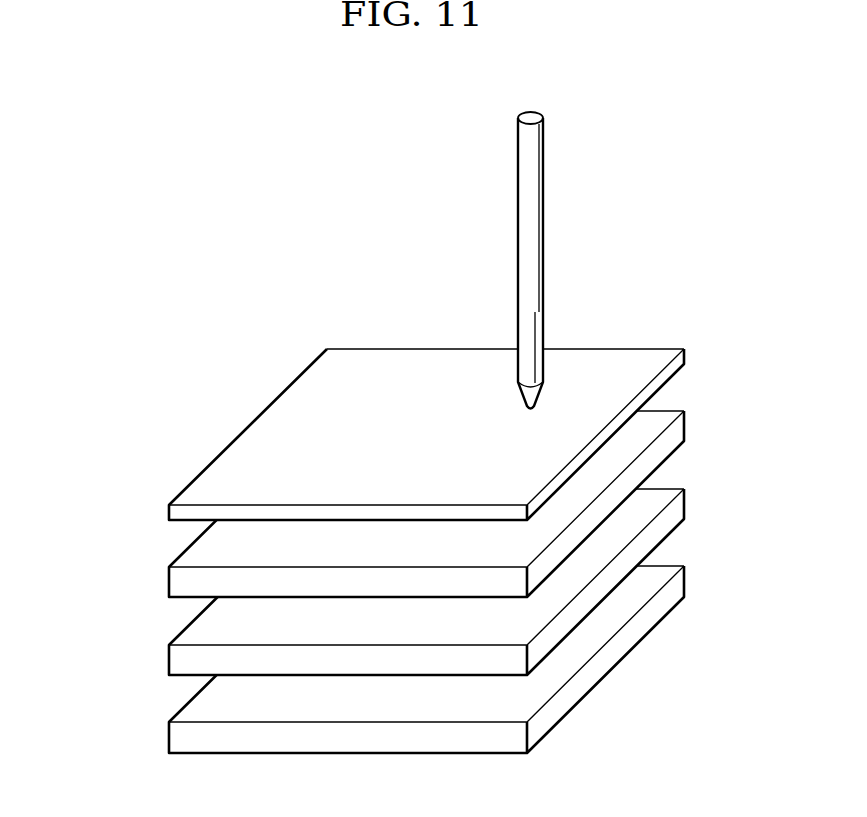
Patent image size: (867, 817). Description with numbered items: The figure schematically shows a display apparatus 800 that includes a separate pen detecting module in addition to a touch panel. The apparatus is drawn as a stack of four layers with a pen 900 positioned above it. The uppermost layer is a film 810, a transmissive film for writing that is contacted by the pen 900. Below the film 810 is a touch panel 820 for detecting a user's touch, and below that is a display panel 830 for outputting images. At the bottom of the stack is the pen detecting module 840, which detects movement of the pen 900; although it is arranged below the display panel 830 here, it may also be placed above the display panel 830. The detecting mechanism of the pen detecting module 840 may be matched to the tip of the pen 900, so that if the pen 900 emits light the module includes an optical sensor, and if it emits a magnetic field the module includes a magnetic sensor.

The display apparatus 800 is at (361, 551).
The film 810 is at (390, 438).
The touch panel 820 is at (178, 588).
The display panel 830 is at (178, 665).
The pen detecting module 840 is at (178, 742).
The pen 900 is at (535, 257).